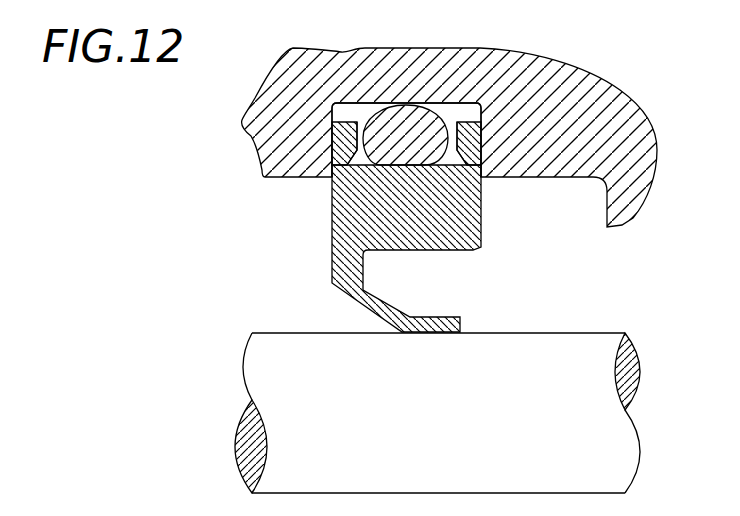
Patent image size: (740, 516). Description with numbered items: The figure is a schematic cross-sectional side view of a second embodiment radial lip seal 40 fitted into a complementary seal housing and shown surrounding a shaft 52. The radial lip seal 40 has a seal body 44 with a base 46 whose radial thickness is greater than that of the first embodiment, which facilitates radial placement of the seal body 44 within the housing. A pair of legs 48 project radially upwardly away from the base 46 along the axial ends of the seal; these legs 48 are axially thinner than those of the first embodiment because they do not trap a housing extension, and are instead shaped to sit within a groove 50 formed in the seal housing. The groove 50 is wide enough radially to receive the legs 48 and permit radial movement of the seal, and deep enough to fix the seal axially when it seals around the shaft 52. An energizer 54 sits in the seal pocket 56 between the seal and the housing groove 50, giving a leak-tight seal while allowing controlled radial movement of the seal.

The radial lip seal 40 is at (250, 206).
The seal body 44 is at (500, 203).
The base 46 is at (458, 152).
The legs 48 is at (342, 133).
The groove 50 is at (357, 150).
The shaft 52 is at (552, 352).
The energizer 54 is at (392, 150).
The seal pocket 56 is at (370, 114).